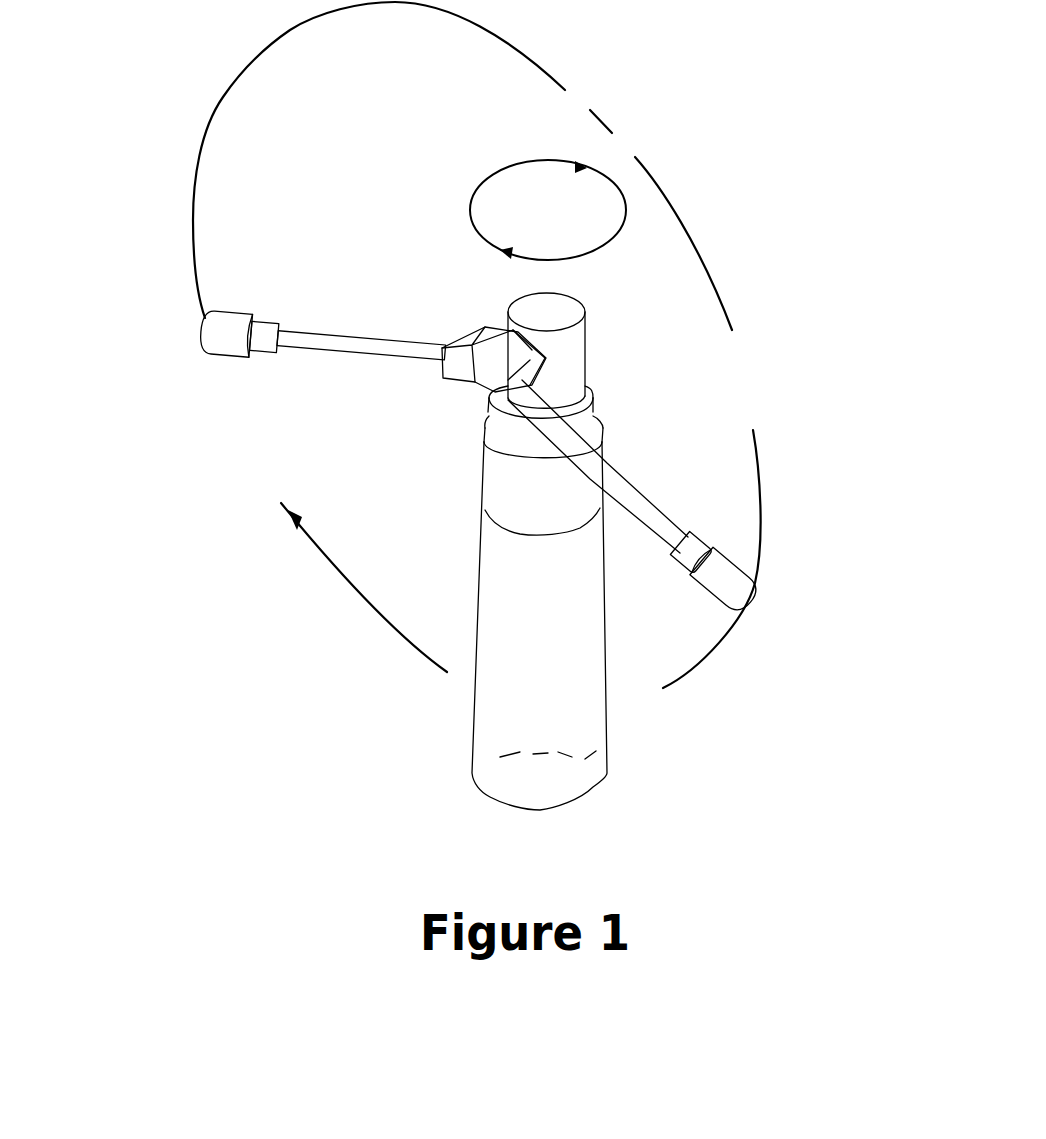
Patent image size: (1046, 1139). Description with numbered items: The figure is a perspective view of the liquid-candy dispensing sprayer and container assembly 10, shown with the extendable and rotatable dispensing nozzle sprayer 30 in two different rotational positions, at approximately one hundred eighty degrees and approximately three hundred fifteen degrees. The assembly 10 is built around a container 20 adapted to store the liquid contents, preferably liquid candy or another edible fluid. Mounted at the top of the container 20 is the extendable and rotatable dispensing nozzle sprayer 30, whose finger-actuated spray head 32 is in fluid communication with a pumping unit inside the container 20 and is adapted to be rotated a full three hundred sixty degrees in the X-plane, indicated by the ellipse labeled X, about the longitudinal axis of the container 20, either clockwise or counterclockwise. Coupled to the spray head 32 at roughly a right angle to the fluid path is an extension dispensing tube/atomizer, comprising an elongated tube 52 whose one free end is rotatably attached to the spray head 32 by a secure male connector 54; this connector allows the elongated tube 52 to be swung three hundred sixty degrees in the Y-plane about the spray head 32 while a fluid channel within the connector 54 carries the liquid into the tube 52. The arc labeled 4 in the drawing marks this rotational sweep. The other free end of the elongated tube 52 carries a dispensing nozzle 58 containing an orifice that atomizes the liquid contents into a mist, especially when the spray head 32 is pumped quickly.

The liquid-candy dispensing sprayer and container assembly 10 is at (658, 284).
The container 20 is at (578, 688).
The extendable and rotatable dispensing nozzle sprayer 30 is at (569, 368).
The finger-actuated spray head 32 is at (524, 300).
The elongated tube 52 is at (339, 360).
The secure male connector 54 is at (449, 372).
The dispensing nozzle 58 is at (233, 333).
The rotational travel path 4 is at (742, 378).
The X-plane X is at (486, 181).